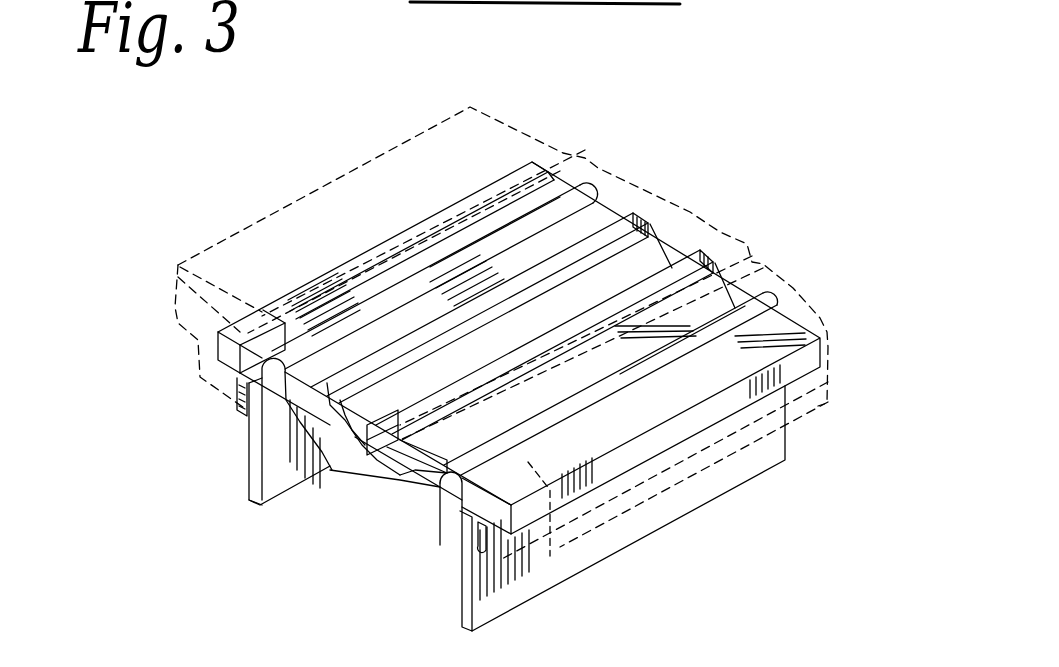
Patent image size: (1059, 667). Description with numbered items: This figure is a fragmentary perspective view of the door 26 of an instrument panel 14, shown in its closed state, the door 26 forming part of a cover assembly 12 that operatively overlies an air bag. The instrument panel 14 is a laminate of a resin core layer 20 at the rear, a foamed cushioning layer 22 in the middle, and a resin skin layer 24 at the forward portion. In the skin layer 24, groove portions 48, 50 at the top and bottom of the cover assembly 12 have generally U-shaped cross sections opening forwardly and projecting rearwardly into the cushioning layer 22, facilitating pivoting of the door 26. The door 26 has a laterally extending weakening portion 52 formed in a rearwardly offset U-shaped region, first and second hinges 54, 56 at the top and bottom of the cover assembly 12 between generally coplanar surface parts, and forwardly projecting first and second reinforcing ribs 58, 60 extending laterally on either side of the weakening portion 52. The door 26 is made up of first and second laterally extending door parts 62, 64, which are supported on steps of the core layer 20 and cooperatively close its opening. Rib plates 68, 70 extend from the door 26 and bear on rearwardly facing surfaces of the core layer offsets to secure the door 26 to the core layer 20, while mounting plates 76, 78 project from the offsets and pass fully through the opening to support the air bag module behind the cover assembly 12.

The cover assembly 12 is at (692, 206).
The instrument panel 14 is at (673, 458).
The core layer 20 is at (185, 328).
The cushioning layer 22 is at (187, 292).
The skin layer 24 is at (233, 300).
The door 26 is at (410, 527).
The groove portion 48 is at (298, 292).
The groove portion 50 is at (478, 390).
The weakening portion 52 is at (364, 445).
The first hinge 54 is at (265, 500).
The second hinge 56 is at (455, 477).
The first reinforcing rib 58 is at (321, 445).
The second reinforcing rib 60 is at (390, 450).
The first door part 62 is at (300, 445).
The second door part 64 is at (410, 450).
The rib plate 68 is at (233, 402).
The rib plate 70 is at (497, 553).
The mounting plate 76 is at (283, 500).
The mounting plate 78 is at (527, 580).